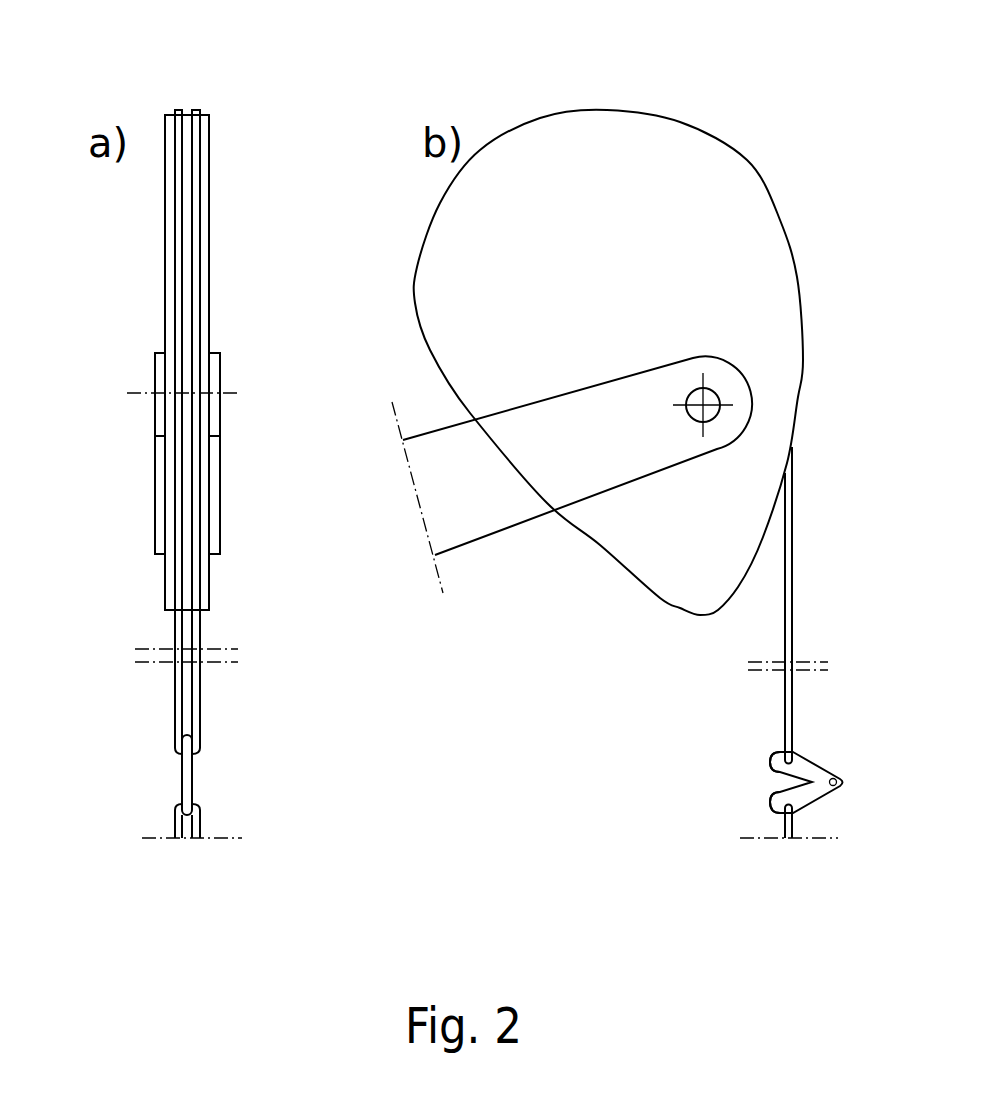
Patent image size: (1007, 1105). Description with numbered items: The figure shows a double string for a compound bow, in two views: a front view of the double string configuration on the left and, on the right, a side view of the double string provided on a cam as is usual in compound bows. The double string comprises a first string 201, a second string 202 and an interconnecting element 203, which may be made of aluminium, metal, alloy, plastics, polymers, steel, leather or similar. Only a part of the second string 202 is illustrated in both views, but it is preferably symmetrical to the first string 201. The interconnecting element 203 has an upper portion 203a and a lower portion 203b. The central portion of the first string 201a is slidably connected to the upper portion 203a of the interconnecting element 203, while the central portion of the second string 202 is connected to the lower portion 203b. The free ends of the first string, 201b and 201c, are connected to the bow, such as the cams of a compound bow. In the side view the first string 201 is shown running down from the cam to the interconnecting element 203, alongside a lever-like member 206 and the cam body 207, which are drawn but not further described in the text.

The first string 201 is at (203, 175).
The central portion of the first string 201a is at (173, 729).
The free end of the first string 201b is at (172, 110).
The free end of the first string 201c is at (205, 110).
The second string 202 is at (185, 827).
The interconnecting element 203 is at (188, 765).
The upper portion 203a is at (773, 762).
The lower portion 203b is at (773, 808).
The lever arm 206 is at (500, 512).
The cam disc 207 is at (635, 197).